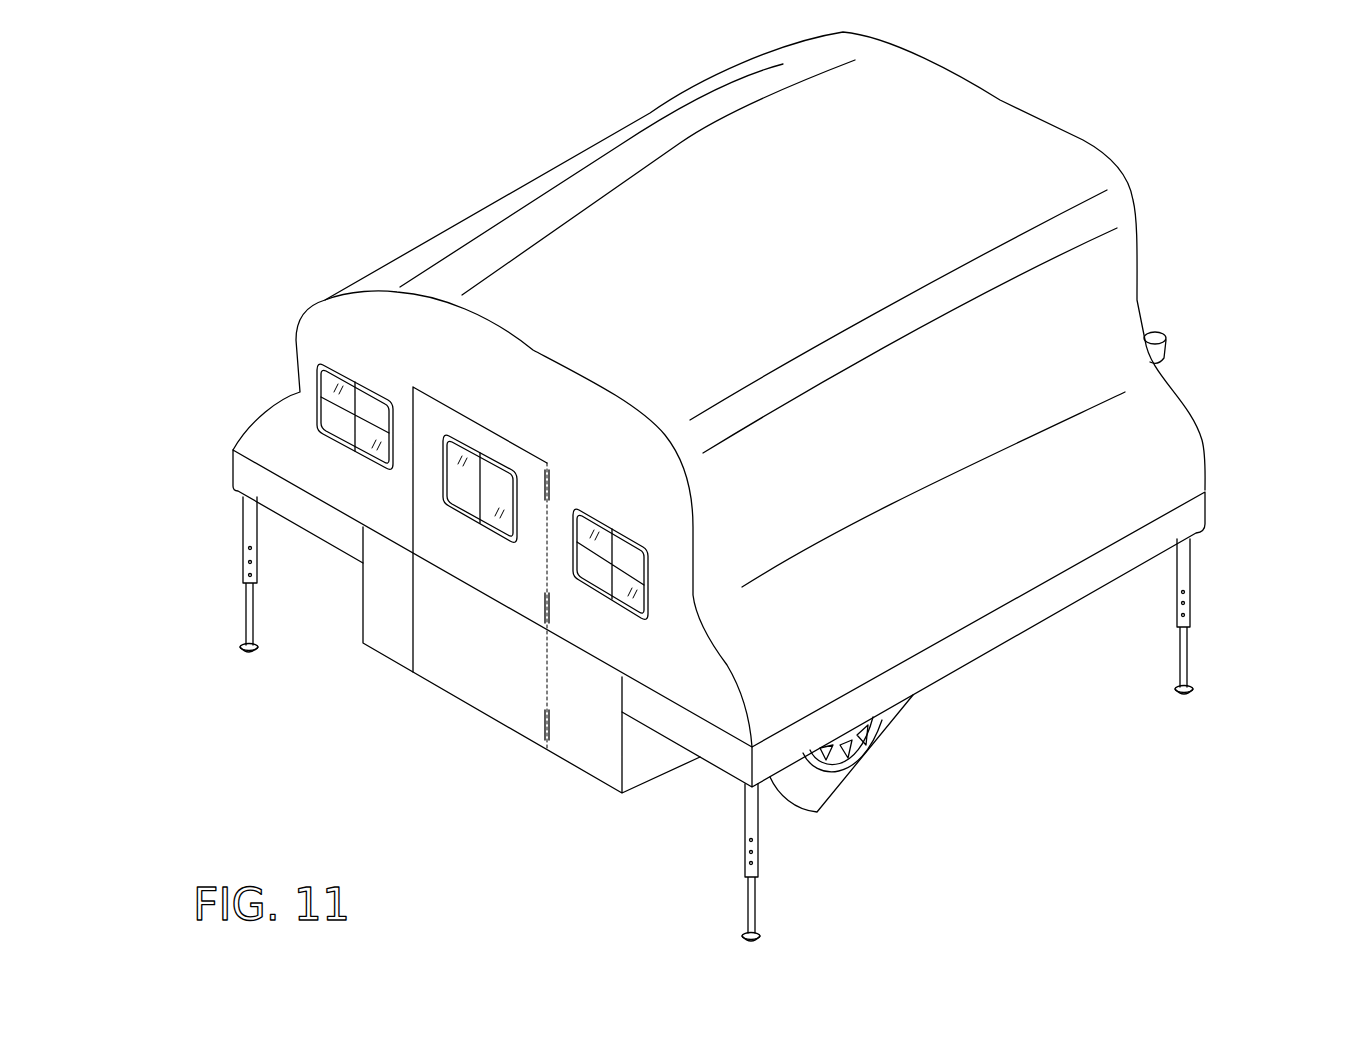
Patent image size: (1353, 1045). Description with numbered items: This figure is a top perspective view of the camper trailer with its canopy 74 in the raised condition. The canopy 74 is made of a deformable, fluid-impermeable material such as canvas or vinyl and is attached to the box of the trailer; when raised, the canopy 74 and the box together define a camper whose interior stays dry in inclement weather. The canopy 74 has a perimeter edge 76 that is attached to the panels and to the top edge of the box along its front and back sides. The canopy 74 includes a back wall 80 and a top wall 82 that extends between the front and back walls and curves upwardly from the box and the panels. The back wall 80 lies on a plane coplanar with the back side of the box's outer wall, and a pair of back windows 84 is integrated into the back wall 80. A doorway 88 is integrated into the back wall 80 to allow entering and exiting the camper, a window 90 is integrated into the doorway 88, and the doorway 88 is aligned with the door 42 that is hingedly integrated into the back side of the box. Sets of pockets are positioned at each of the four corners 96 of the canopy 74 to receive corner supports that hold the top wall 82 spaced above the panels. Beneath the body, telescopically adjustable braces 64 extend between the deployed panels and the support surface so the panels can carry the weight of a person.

The door 42 is at (510, 703).
The brace 64 is at (247, 600).
The canopy 74 is at (612, 185).
The perimeter edge 76 is at (1167, 508).
The back wall 80 is at (313, 337).
The top wall 82 is at (465, 260).
The back window 84 is at (317, 390).
The doorway 88 is at (413, 490).
The window 90 is at (482, 545).
The corner 96 is at (228, 451).